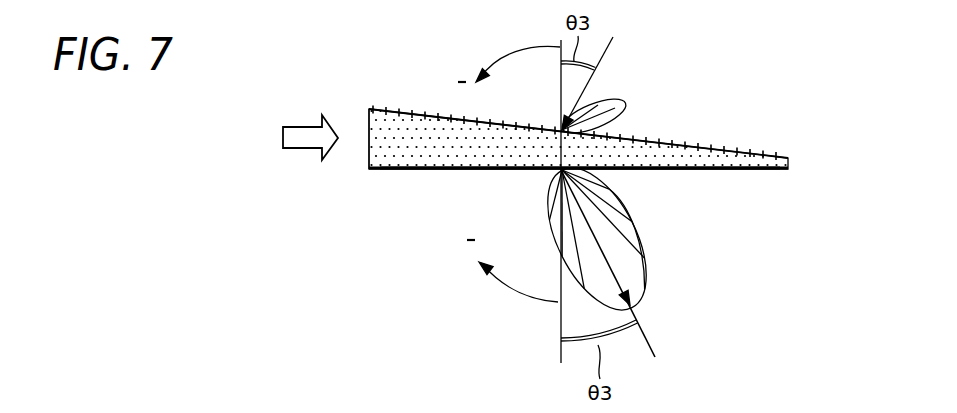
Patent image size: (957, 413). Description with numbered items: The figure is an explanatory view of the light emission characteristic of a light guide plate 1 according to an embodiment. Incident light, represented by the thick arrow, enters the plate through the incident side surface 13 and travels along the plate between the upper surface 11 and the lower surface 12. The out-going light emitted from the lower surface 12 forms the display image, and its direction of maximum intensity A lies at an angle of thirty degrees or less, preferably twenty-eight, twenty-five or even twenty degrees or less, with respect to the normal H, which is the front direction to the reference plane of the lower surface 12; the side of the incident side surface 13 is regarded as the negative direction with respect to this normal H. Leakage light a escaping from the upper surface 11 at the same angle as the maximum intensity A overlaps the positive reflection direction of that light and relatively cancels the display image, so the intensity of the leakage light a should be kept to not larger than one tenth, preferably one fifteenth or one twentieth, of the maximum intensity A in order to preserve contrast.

The light guide plate 1 is at (594, 137).
The upper surface 11 is at (400, 108).
The lower surface 12 is at (406, 170).
The incident side surface 13 is at (366, 145).
The leakage light a is at (556, 122).
The maximum intensity of out-going light A is at (612, 273).
The normal H is at (558, 318).